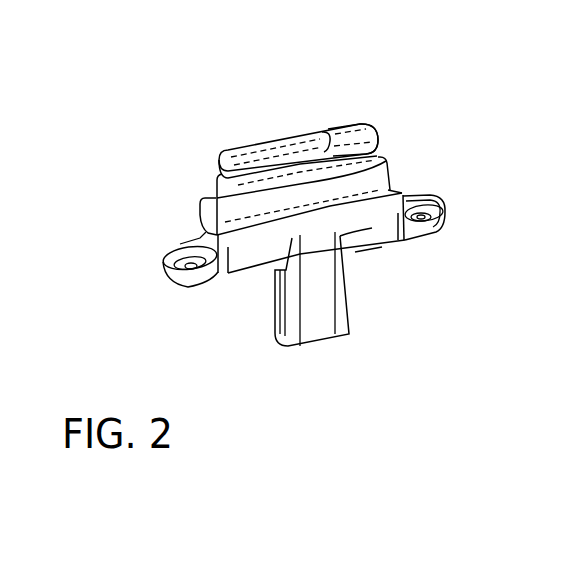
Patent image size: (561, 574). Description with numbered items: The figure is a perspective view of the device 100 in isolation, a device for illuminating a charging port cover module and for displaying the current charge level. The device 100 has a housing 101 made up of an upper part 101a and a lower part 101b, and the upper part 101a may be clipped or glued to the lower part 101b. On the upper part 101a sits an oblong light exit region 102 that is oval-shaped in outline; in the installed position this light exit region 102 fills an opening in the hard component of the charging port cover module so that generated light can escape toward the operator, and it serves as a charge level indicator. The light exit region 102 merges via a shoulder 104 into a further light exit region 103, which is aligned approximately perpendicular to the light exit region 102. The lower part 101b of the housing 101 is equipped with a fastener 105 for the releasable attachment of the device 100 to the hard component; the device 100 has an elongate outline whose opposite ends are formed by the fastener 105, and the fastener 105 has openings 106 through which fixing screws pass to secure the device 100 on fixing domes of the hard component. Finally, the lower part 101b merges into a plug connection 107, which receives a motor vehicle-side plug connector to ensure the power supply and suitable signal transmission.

The device 100 is at (194, 148).
The housing 101 is at (410, 166).
The upper part 101a is at (403, 193).
The lower part 101b is at (382, 247).
The light exit region 102 is at (257, 150).
The light exit region 103 is at (376, 150).
The shoulder 104 is at (328, 150).
The fastener 105 is at (187, 281).
The openings 106 is at (190, 265).
The plug connection 107 is at (328, 330).